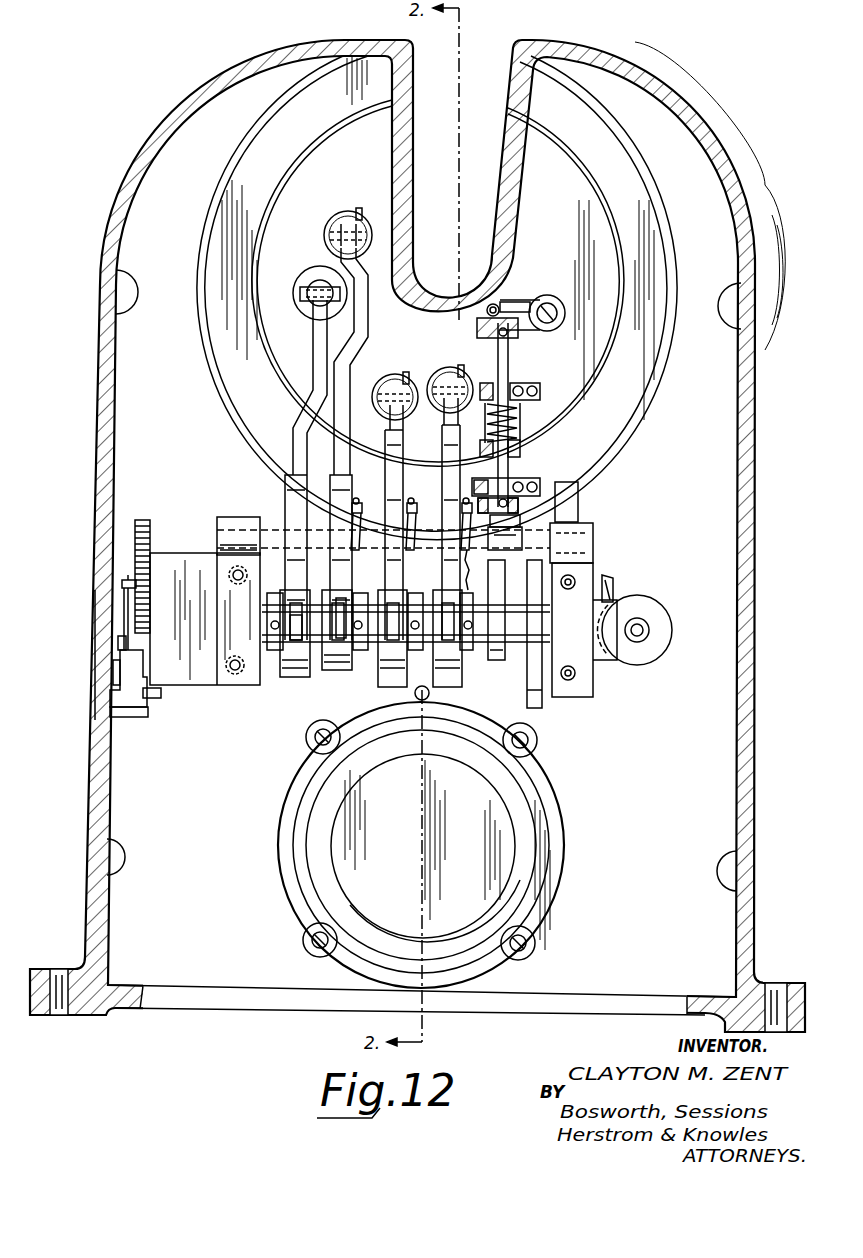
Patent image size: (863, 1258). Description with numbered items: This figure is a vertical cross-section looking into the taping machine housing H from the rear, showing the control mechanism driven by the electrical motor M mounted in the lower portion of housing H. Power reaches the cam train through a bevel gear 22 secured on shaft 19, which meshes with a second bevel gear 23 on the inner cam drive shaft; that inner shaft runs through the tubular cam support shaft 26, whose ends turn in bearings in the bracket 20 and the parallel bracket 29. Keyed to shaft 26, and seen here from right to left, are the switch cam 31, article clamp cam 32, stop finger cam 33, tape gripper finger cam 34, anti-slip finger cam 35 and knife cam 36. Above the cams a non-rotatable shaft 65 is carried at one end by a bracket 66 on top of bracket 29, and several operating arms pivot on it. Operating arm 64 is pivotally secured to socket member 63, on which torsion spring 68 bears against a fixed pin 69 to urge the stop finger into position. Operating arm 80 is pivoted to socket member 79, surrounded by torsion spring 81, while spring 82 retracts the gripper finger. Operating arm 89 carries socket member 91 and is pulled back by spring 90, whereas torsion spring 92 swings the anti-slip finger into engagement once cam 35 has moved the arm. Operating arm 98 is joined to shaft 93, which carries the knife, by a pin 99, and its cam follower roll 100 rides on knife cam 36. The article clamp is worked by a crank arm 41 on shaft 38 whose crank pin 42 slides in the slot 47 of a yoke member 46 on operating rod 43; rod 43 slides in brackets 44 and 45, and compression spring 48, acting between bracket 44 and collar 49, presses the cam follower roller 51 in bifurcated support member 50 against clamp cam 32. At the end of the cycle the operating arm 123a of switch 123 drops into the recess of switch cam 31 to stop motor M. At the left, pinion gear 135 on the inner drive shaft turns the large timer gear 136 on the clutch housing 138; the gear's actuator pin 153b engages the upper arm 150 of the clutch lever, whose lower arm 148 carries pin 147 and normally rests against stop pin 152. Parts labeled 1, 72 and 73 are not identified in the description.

The housing H is at (757, 730).
The electrical motor M is at (535, 847).
The housing top 1 is at (472, 62).
The torsion spring 92 is at (348, 210).
The socket member 91 is at (326, 245).
The operating arm 89 is at (369, 323).
The pin 99 is at (300, 295).
The shaft 93 is at (312, 312).
The operating arm 98 is at (313, 358).
The torsion spring 81 is at (388, 380).
The socket member 79 is at (388, 415).
The operating arm 80 is at (385, 475).
The torsion spring 68 is at (436, 375).
The fixed pin 69 is at (455, 368).
The socket member 63 is at (443, 415).
The operating arm 64 is at (442, 455).
The crank pin 42 is at (492, 304).
The slot 47 is at (512, 300).
The crank arm 41 is at (533, 300).
The shaft 38 is at (566, 313).
The yoke member 46 is at (518, 336).
The operating rod 43 is at (509, 362).
The bracket 44 is at (540, 398).
The compression spring 48 is at (522, 420).
The collar 49 is at (522, 455).
The bracket 45 is at (520, 492).
The cam follower roller 51 is at (522, 518).
The bifurcated support member 50 is at (524, 530).
The switch 123 is at (580, 490).
The operating arm 123a is at (594, 536).
The bracket 20 is at (585, 572).
The bevel gear 23 is at (614, 582).
The shaft 19 is at (648, 622).
The bevel gear 22 is at (673, 628).
The spring 90 is at (360, 530).
The pawl 73 is at (462, 505).
The spring 82 is at (412, 552).
The spring wire 72 is at (468, 572).
The shaft 65 is at (272, 528).
The bracket 66 is at (247, 517).
The bracket 29 is at (228, 686).
The clutch housing 138 is at (190, 562).
The timer gear 136 is at (150, 524).
The actuator pin 153b is at (122, 587).
The upper arm 150 is at (124, 609).
The pinion gear 135 is at (130, 626).
The lower arm 148 is at (118, 700).
The pin 147 is at (158, 700).
The stop pin 152 is at (118, 718).
The knife cam 36 is at (296, 679).
The anti-slip finger cam 35 is at (340, 672).
The tape gripper finger cam 34 is at (392, 660).
The stop finger cam 33 is at (448, 690).
The cam follower roll 100 is at (300, 620).
The tubular cam support shaft 26 is at (372, 612).
The article clamp cam 32 is at (498, 661).
The switch cam 31 is at (543, 708).